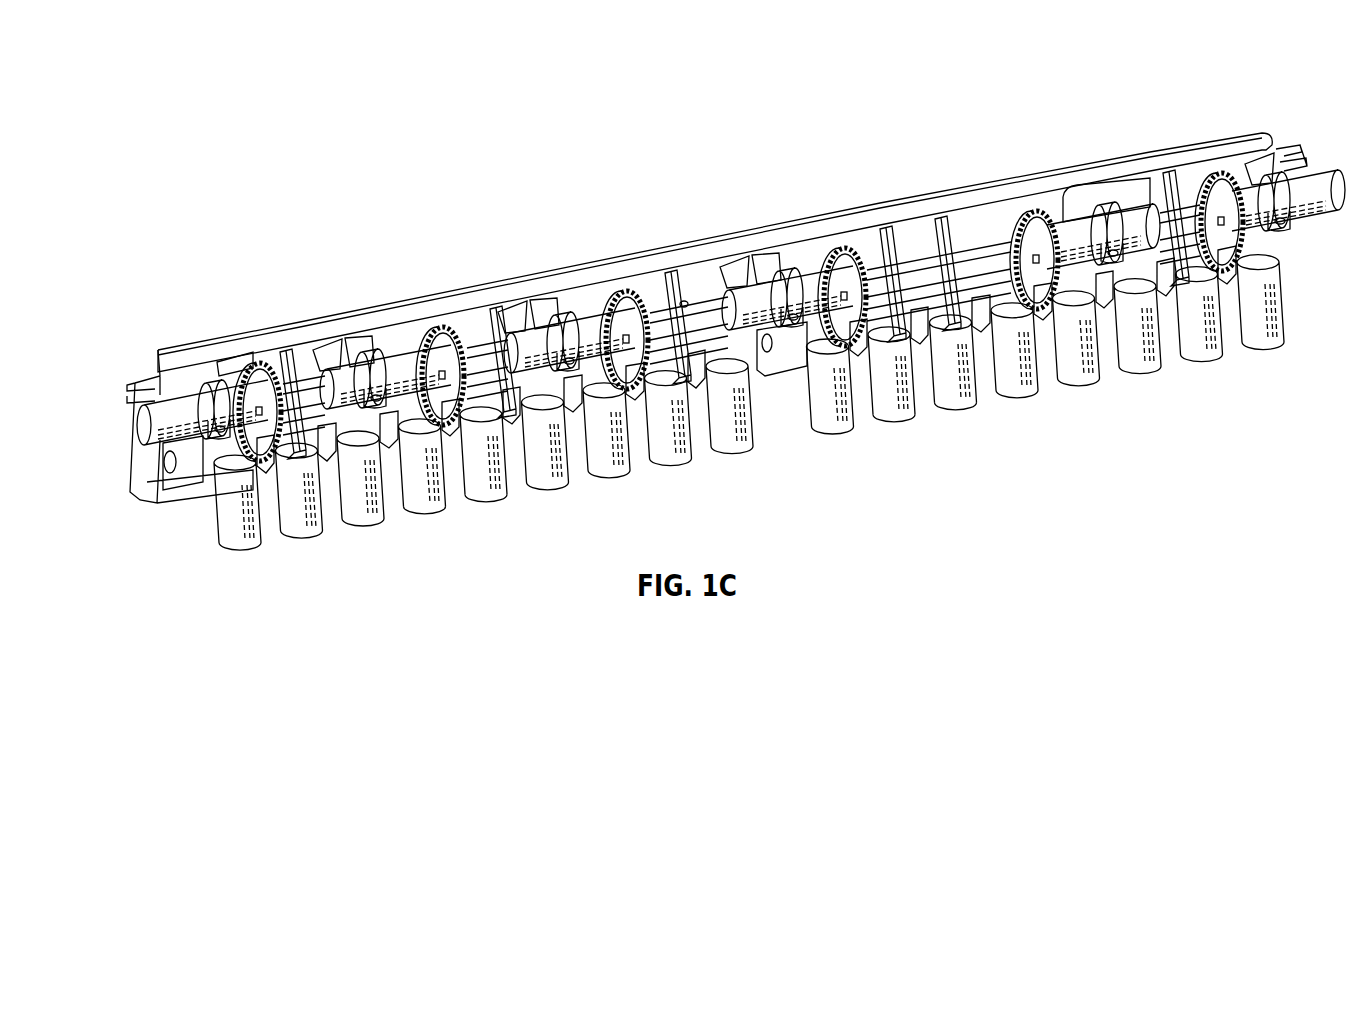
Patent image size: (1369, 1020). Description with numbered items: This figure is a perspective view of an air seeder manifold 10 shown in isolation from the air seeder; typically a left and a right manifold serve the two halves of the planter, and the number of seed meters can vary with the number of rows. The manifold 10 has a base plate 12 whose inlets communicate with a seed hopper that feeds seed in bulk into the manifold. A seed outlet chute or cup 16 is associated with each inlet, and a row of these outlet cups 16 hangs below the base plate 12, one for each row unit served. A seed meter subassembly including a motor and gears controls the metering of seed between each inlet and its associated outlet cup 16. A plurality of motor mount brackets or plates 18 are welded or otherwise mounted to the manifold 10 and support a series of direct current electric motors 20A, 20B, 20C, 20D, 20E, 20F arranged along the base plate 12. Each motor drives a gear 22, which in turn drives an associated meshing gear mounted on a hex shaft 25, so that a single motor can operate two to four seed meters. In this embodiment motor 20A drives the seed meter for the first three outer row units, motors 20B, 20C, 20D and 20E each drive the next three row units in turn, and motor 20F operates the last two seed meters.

The air seeder manifold 10 is at (662, 176).
The base plate 12 is at (787, 268).
The seed outlet chute or cup 16 is at (1247, 381).
The motor mount brackets or plates 18 is at (1258, 165).
The motor 20A is at (147, 380).
The motor 20B is at (350, 363).
The motor 20C is at (533, 337).
The motor 20D is at (753, 293).
The motor 20E is at (1137, 217).
The motor 20F is at (1325, 182).
The gear 22 is at (1212, 173).
The hex shaft 25 is at (680, 300).